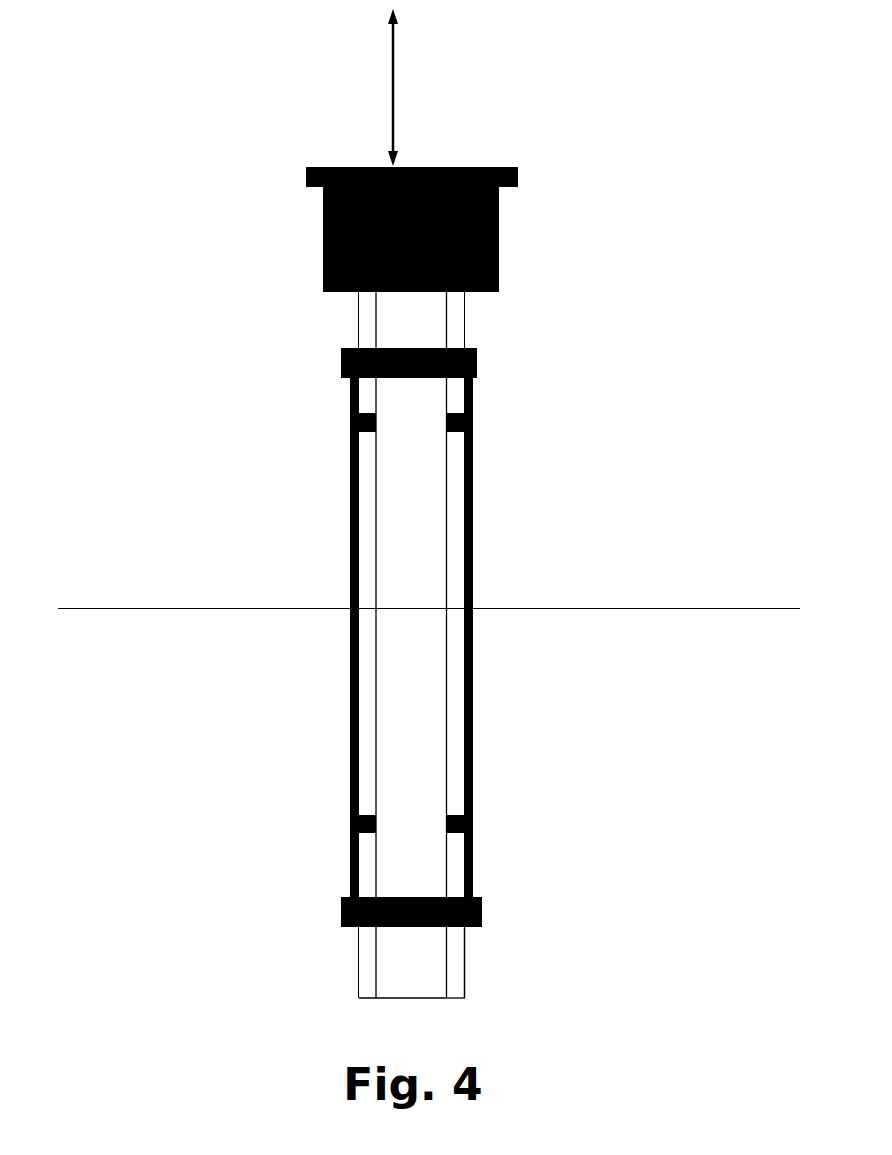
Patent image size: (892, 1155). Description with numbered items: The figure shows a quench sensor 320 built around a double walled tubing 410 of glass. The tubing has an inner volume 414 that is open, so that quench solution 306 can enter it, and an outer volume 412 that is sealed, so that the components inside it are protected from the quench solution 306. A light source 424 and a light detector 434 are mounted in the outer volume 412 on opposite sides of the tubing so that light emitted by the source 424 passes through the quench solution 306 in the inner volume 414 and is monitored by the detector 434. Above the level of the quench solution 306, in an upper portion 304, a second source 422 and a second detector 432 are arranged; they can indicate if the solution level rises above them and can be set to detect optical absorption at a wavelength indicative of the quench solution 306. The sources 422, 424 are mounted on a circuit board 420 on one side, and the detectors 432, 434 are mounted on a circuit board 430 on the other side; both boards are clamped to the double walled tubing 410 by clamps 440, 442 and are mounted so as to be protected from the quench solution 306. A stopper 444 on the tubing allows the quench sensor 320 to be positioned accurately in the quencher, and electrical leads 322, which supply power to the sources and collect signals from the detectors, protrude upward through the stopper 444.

The quench sensor 320 is at (189, 274).
The electrical leads 322 is at (366, 87).
The portion above the level of quench solution 304 is at (577, 532).
The quench solution 306 is at (582, 726).
The double walled tubing 410 is at (358, 325).
The outer volume 412 is at (454, 961).
The inner volume 414 is at (395, 978).
The circuit board 420 is at (352, 733).
The source 422 is at (350, 434).
The light source 424 is at (350, 830).
The circuit board 430 is at (473, 697).
The detector 432 is at (473, 427).
The light detector 434 is at (473, 825).
The clamp 440 is at (482, 913).
The clamp 442 is at (477, 373).
The stopper 444 is at (499, 212).